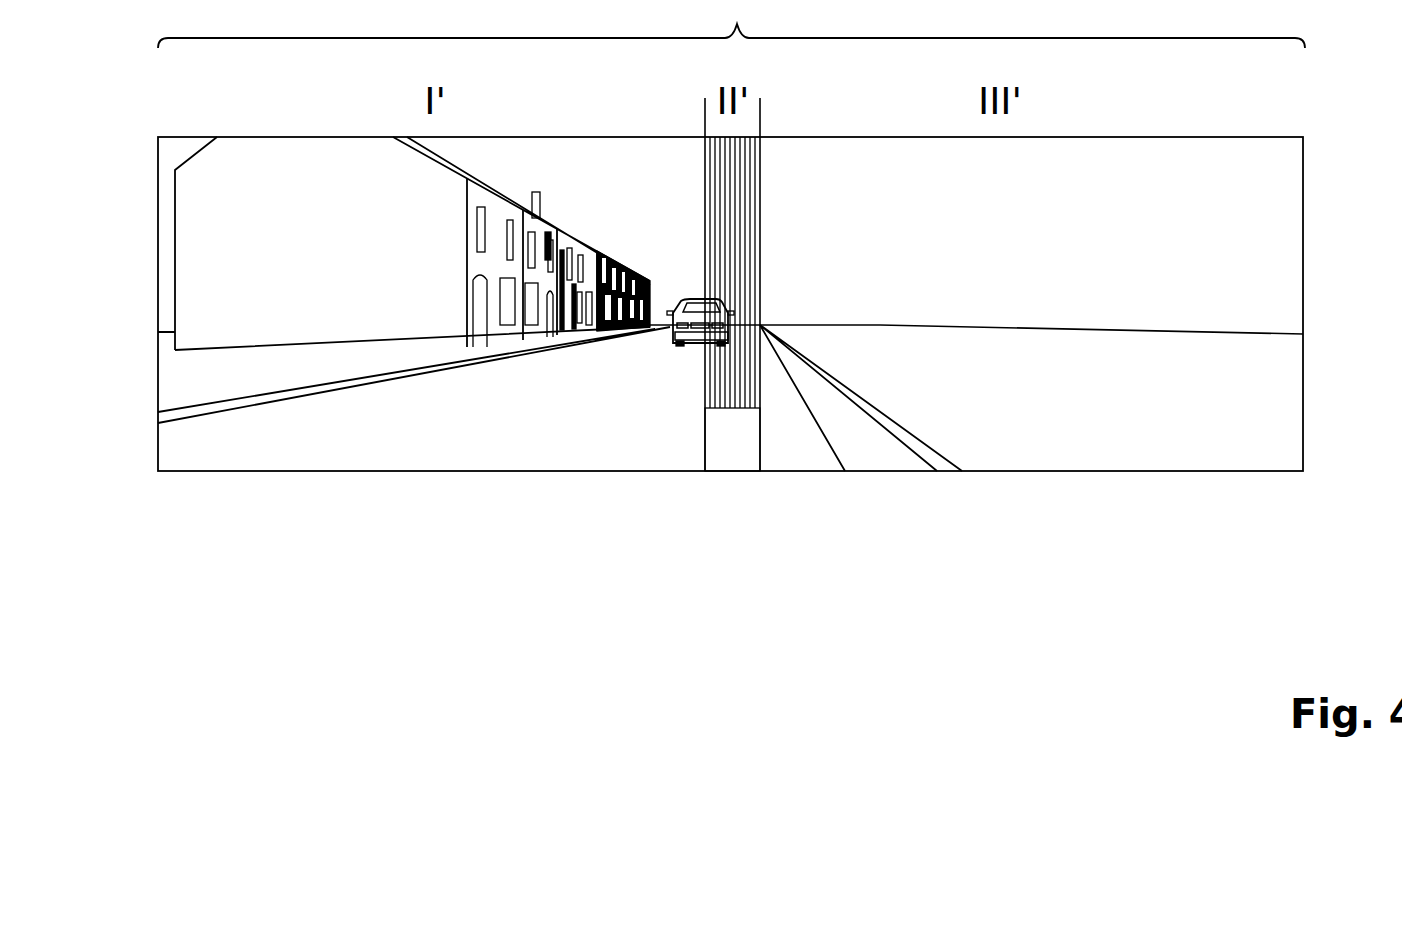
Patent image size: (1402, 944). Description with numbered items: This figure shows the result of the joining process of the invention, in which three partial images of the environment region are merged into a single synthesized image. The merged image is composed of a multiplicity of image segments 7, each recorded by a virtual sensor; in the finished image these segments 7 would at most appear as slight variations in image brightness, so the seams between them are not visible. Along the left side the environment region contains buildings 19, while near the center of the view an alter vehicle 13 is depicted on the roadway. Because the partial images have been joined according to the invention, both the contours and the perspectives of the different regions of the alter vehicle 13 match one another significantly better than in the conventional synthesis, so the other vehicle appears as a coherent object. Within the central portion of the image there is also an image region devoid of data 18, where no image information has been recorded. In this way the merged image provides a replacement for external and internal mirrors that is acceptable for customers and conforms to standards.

The image segments 7 is at (708, 358).
The alter vehicle 13 is at (667, 323).
The image region devoid of data 18 is at (734, 450).
The buildings 19 is at (497, 237).